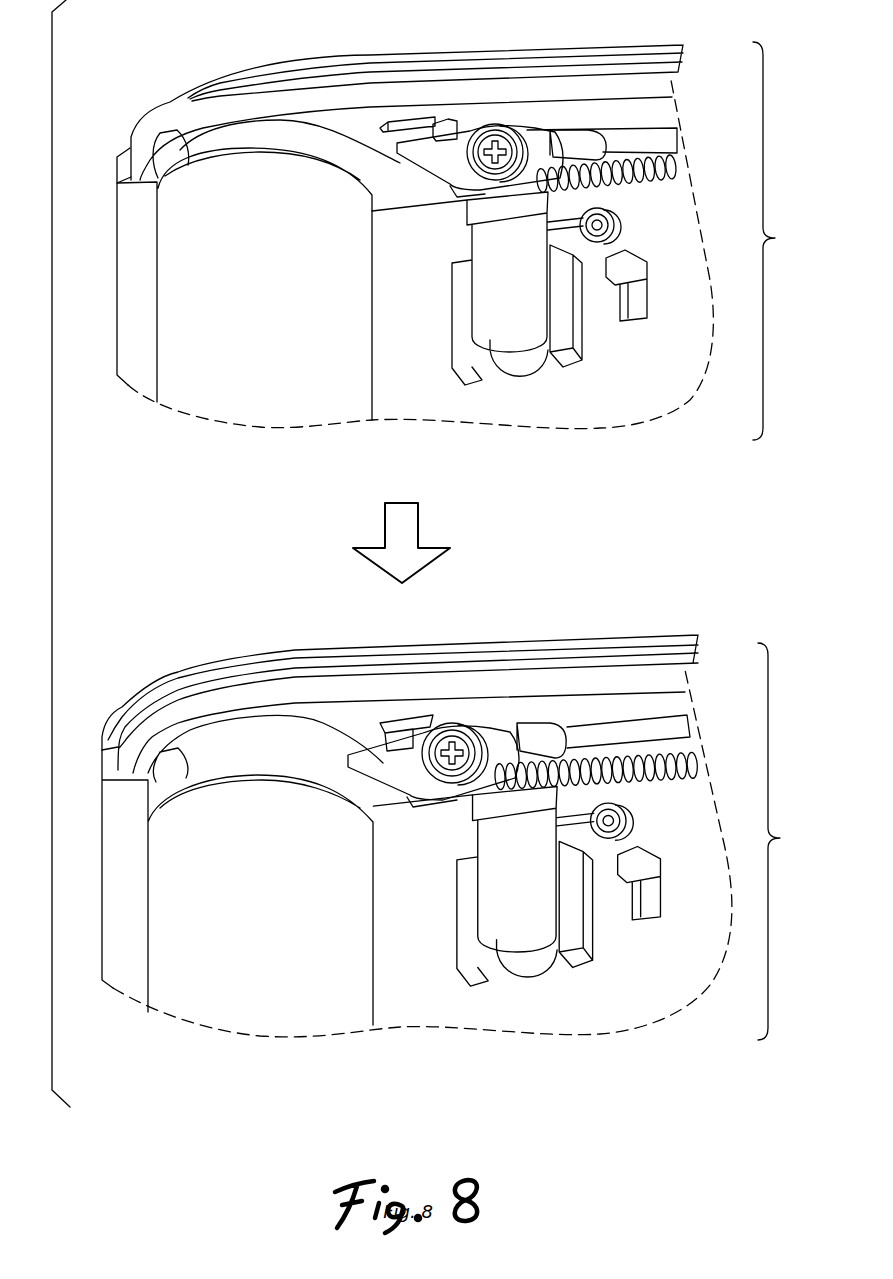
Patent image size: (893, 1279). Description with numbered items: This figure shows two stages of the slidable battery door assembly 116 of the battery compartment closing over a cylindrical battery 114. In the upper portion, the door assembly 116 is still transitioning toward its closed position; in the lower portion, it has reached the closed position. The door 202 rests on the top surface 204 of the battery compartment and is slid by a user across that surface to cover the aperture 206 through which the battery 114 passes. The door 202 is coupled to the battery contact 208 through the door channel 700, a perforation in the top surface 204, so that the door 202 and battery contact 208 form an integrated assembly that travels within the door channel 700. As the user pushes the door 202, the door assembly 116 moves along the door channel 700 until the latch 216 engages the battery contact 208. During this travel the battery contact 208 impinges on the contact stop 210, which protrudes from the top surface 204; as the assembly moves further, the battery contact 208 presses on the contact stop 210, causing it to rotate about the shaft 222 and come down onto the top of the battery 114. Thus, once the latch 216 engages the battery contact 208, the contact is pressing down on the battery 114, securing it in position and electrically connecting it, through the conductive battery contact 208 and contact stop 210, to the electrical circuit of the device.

The battery 114 is at (417, 556).
The slidable battery door assembly 116 is at (790, 541).
The door 202 is at (394, 65).
The top surface 204 is at (172, 113).
The aperture 206 is at (187, 128).
The battery contact 208 is at (458, 173).
The contact stop 210 is at (392, 727).
The latch 216 is at (516, 589).
The shaft 222 is at (460, 735).
The door channel 700 is at (663, 135).